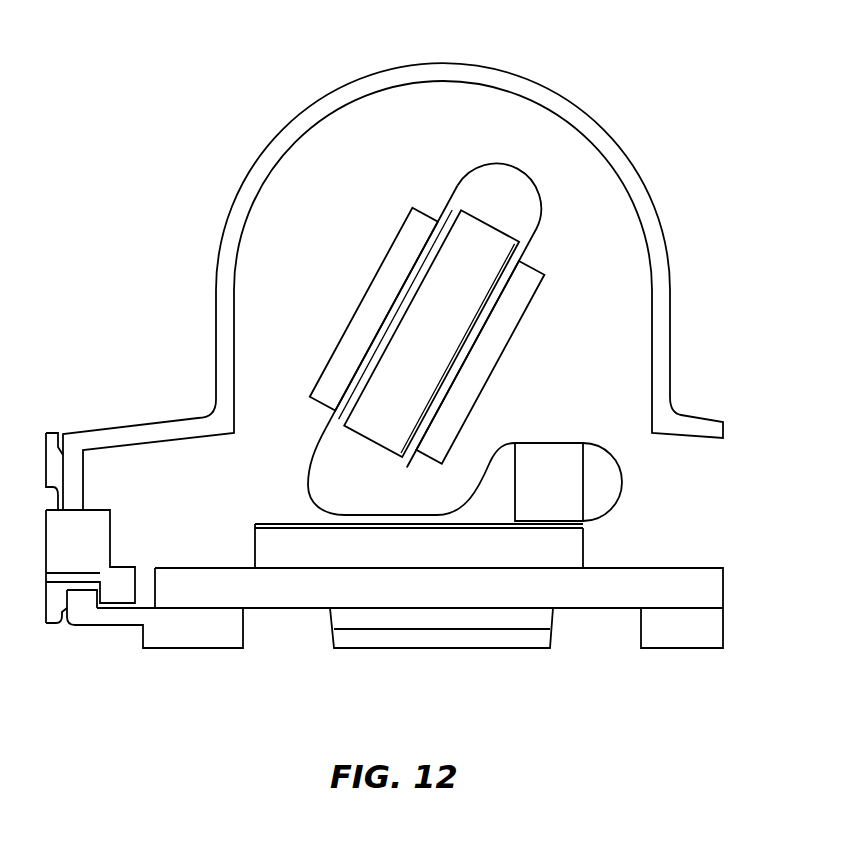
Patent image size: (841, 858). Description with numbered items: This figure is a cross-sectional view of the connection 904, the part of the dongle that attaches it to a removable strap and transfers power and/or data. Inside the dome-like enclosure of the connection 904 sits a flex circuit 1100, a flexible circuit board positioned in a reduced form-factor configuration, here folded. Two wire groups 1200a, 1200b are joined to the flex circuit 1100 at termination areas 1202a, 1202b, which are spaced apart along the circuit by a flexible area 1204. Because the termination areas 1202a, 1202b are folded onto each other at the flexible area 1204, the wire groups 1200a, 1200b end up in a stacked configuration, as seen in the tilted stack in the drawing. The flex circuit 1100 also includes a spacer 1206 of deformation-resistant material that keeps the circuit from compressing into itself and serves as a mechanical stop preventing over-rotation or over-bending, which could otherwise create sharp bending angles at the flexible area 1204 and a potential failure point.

The connection 904 is at (92, 101).
The flex circuit 1100 is at (532, 153).
The wire group 1200a is at (390, 268).
The wire group 1200b is at (518, 295).
The termination area 1202a is at (392, 305).
The termination area 1202b is at (462, 374).
The flexible area 1204 is at (542, 185).
The spacer 1206 is at (383, 423).